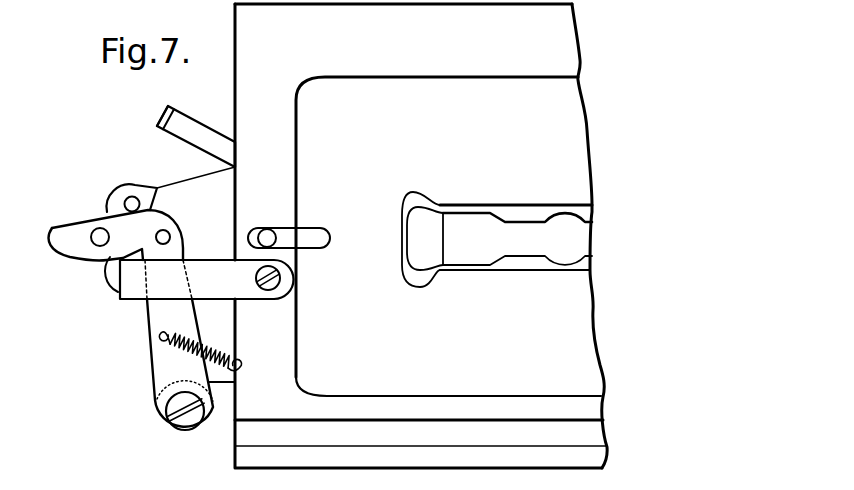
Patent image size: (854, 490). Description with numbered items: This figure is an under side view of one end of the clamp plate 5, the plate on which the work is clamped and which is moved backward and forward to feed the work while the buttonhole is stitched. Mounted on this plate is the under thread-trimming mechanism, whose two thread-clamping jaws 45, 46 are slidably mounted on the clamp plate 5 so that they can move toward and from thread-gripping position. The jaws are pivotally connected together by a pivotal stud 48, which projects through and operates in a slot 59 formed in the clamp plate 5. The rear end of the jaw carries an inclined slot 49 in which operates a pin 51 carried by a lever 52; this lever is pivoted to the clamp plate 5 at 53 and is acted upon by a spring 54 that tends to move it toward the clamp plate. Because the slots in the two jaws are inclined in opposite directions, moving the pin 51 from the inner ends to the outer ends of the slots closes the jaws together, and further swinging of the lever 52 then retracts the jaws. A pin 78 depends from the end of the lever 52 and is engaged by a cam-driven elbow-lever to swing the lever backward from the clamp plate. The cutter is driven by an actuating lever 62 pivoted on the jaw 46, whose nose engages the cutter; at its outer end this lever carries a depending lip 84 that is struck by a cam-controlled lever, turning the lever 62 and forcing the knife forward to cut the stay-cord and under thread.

The clamp plate 5 is at (235, 450).
The thread-clamping jaw 45 is at (123, 188).
The thread-clamping jaw 46 is at (112, 277).
The pivotal stud 48 is at (263, 233).
The inclined slot 49 is at (134, 198).
The pin 51 is at (165, 233).
The lever 52 is at (157, 317).
The pivot 53 is at (175, 407).
The spring 54 is at (177, 348).
The slot 59 is at (305, 233).
The actuating lever 62 is at (203, 130).
The pin 78 is at (97, 228).
The depending lip 84 is at (158, 112).